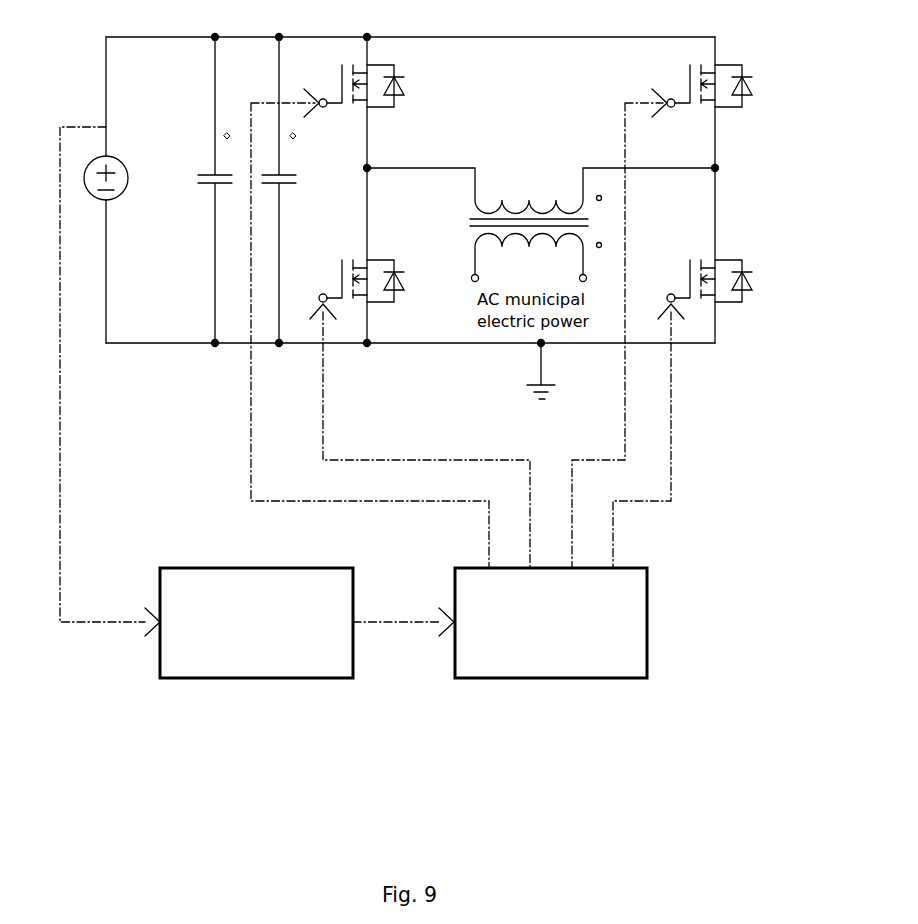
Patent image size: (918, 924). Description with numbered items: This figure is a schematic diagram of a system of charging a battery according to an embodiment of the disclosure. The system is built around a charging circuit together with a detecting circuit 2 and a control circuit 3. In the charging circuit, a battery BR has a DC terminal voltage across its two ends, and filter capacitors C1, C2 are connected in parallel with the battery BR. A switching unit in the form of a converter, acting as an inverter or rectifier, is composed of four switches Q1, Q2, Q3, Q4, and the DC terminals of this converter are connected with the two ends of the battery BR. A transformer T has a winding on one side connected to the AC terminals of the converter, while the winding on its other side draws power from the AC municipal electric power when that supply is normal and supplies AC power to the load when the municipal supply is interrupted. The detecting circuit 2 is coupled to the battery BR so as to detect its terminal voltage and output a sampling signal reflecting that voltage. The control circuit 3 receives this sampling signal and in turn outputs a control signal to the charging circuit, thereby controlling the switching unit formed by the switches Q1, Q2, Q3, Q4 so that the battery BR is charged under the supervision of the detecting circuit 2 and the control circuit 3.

The detecting circuit 2 is at (249, 623).
The control circuit 3 is at (543, 623).
The switch Q1 is at (377, 101).
The switch Q2 is at (724, 102).
The switch Q3 is at (380, 256).
The switch Q4 is at (728, 254).
The filter capacitor C1 is at (193, 190).
The filter capacitor C2 is at (299, 190).
The transformer T is at (541, 215).
The battery BR is at (75, 190).